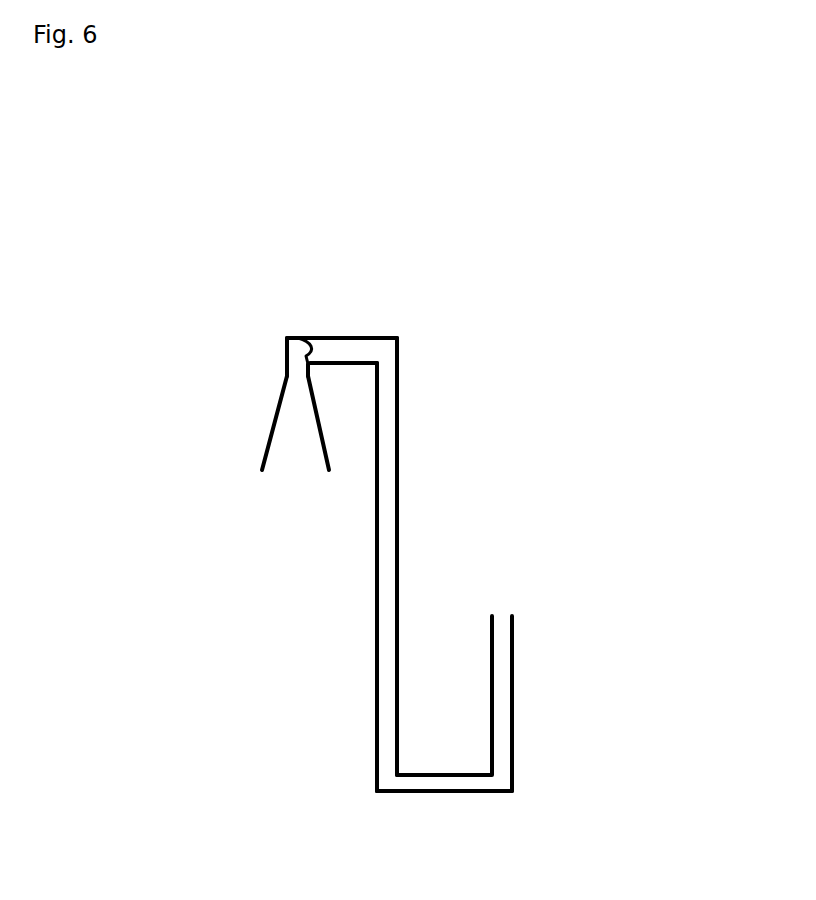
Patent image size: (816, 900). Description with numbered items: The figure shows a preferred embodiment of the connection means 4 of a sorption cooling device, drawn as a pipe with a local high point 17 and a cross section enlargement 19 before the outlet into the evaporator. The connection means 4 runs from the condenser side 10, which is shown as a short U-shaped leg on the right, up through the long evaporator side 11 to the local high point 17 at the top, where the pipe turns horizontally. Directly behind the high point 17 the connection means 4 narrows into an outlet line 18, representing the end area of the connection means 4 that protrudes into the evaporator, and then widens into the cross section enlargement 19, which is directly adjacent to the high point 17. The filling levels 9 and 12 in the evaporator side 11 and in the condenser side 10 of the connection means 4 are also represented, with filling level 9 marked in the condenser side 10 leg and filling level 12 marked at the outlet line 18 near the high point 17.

The connection means 4 is at (420, 793).
The filling level 9 is at (492, 682).
The condenser side 10 is at (512, 758).
The evaporator side 11 is at (377, 723).
The filling level 12 is at (287, 338).
The local high point 17 is at (397, 338).
The outlet line 18 is at (287, 357).
The cross section enlargement 19 is at (265, 447).